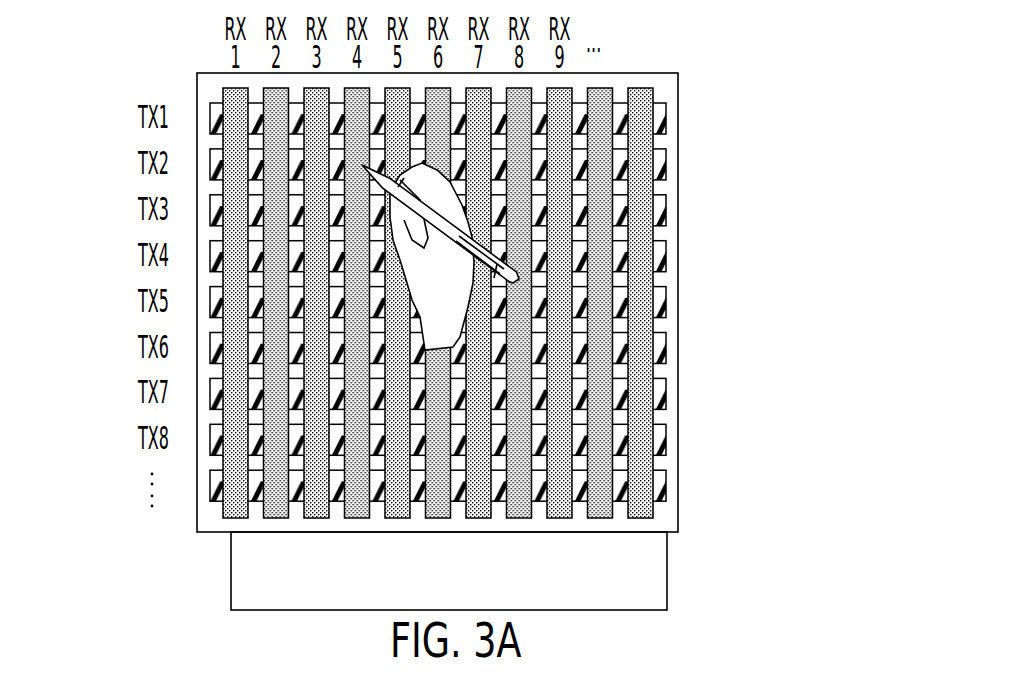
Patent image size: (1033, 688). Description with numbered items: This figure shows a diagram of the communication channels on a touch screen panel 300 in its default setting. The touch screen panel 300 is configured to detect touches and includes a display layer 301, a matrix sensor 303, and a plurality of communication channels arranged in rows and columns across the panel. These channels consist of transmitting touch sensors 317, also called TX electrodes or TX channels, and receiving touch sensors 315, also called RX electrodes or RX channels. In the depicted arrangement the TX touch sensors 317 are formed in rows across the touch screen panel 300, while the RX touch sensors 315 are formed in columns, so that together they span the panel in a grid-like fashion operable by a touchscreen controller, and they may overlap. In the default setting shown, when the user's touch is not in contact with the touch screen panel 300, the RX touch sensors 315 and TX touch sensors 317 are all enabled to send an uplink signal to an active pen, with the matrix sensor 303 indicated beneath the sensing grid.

The touch screen panel 300 is at (98, 77).
The display layer 301 is at (200, 78).
The matrix sensor 303 is at (668, 553).
The receiving (RX) touch sensors 315 is at (638, 92).
The transmitting (TX) touch sensors 317 is at (657, 122).